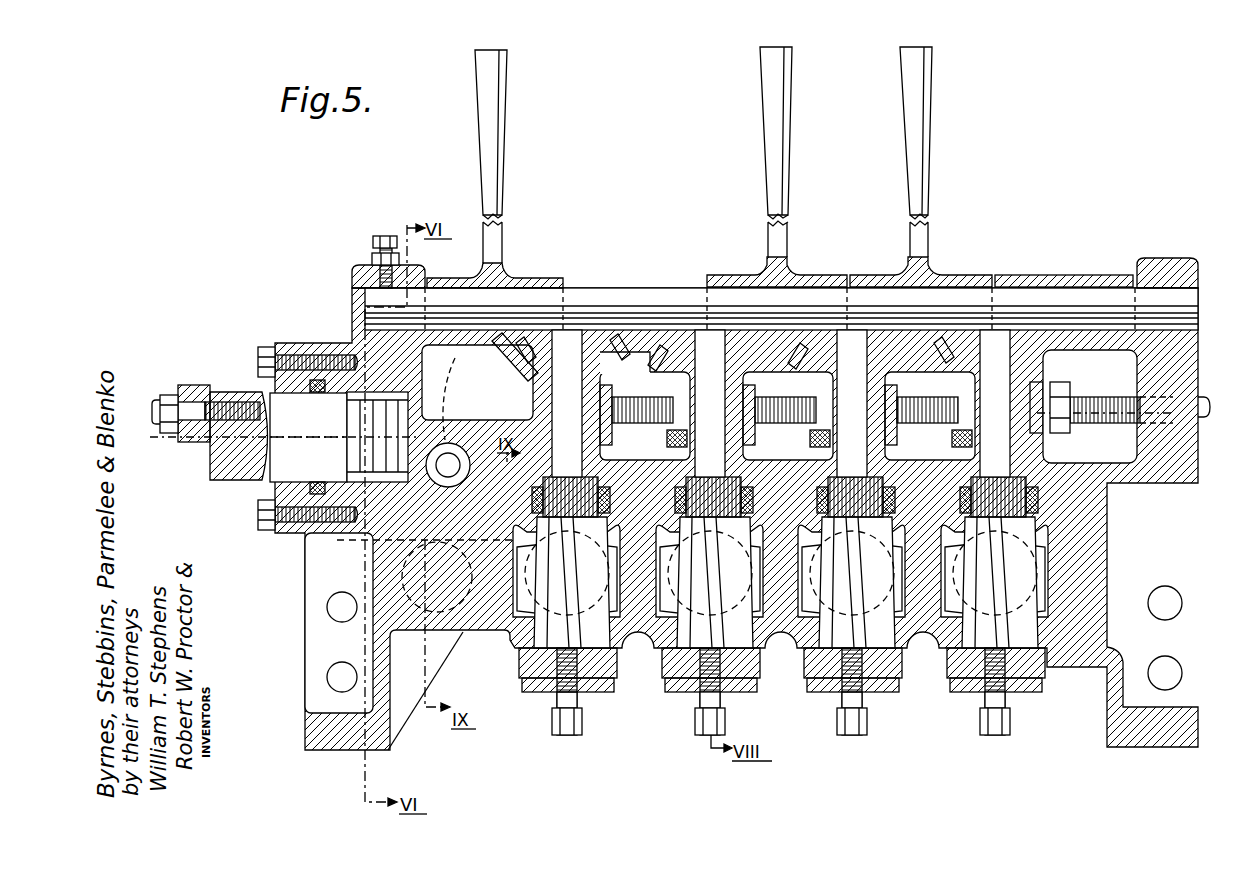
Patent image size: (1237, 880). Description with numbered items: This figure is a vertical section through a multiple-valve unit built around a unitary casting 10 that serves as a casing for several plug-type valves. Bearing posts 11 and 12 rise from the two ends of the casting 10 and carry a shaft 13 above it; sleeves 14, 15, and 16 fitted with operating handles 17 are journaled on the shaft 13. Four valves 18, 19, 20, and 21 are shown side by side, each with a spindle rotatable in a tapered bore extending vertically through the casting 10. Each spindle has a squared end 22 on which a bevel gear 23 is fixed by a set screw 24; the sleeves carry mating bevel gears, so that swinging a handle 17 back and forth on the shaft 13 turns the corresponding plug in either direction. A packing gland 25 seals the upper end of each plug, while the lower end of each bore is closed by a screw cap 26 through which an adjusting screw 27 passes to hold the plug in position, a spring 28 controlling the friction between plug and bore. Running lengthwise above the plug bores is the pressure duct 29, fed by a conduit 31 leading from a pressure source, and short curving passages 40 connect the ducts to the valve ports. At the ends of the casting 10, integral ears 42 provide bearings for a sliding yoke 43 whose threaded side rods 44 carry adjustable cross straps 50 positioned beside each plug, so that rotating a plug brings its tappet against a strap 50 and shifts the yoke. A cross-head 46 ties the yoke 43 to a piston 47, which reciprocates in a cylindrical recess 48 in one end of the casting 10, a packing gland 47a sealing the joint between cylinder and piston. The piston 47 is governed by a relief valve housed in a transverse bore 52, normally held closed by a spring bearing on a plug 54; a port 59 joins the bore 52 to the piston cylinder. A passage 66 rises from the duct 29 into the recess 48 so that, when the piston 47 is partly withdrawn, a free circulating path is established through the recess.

The unitary casting 10 is at (362, 573).
The bearing post 11 is at (352, 269).
The bearing post 12 is at (1159, 261).
The shaft 13 is at (627, 288).
The sleeve 14 is at (534, 277).
The sleeve 15 is at (809, 275).
The sleeve 16 is at (944, 275).
The operating handle 17 is at (500, 143).
The valve 18 is at (560, 629).
The valve 19 is at (672, 631).
The valve 20 is at (840, 631).
The valve 21 is at (972, 636).
The squared end 22 is at (826, 453).
The bevel gear 23 is at (614, 365).
The set screw 24 is at (657, 432).
The packing gland 25 is at (657, 445).
The screw cap 26 is at (699, 693).
The adjusting screw 27 is at (722, 713).
The spring 28 is at (556, 691).
The pressure duct 29 is at (918, 468).
The conduit 31 is at (375, 621).
The curving passage 40 is at (893, 718).
The ear 42 is at (1123, 384).
The sliding yoke 43 is at (166, 432).
The side rod 44 is at (462, 412).
The cross-head 46 is at (190, 398).
The piston 47 is at (230, 467).
The packing gland 47a is at (248, 392).
The cylindrical recess 48 is at (337, 347).
The cross strap 50 is at (746, 388).
The bore 52 is at (514, 368).
The plug 54 is at (477, 382).
The port 59 is at (392, 546).
The passage 66 is at (308, 437).